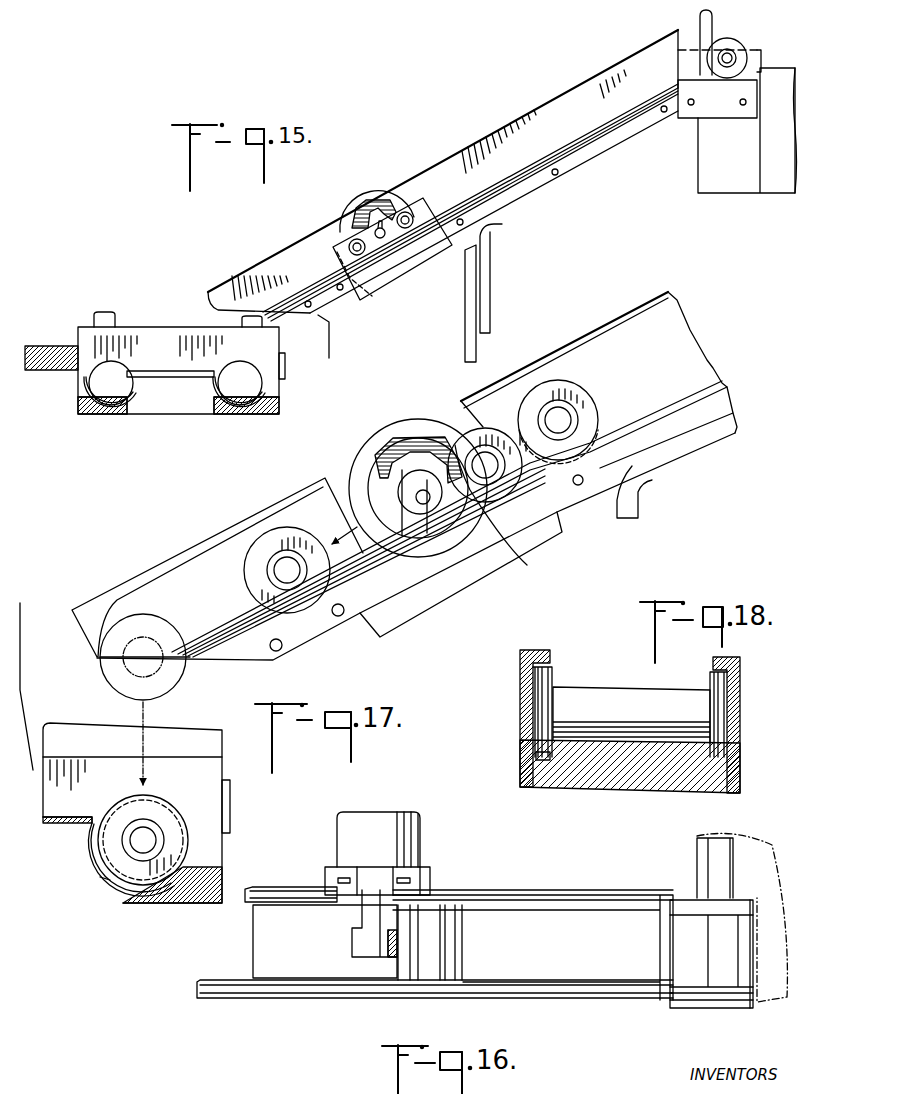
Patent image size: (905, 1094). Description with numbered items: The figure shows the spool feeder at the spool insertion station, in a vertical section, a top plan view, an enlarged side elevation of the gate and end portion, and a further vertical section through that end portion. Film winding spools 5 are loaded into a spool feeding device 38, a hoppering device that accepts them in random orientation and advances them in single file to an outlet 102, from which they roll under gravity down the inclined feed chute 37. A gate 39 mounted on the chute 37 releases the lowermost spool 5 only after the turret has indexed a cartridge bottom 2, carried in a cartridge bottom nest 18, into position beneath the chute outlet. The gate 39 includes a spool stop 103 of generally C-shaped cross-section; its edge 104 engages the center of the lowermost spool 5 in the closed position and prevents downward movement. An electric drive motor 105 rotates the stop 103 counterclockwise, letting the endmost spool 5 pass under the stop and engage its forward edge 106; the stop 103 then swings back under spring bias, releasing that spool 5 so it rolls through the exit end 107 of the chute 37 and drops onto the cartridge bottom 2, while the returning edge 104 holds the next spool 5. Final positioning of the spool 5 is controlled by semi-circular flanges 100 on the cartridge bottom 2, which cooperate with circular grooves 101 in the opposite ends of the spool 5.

In FIG. 15, the cartridge bottom 2 is at (145, 376).
In FIG. 17, the cartridge bottom 2 is at (92, 843).
In FIG. 17, the film winding spool 5 is at (583, 392).
In FIG. 18, the film winding spool 5 is at (612, 700).
In FIG. 16, the film winding spool 5 is at (417, 975).
In FIG. 15, the cartridge bottom nest 18 is at (183, 337).
In FIG. 17, the cartridge bottom nest 18 is at (553, 328).
In FIG. 15, the feed chute 37 is at (556, 114).
In FIG. 17, the feed chute 37 is at (378, 531).
In FIG. 18, the feed chute 37 is at (737, 763).
In FIG. 16, the feed chute 37 is at (558, 997).
In FIG. 16, the spool feeding device 38 is at (758, 872).
In FIG. 15, the gate 39 is at (380, 190).
In FIG. 16, the gate 39 is at (376, 808).
In FIG. 17, the semi-circular flanges 100 is at (100, 877).
In FIG. 18, the circular grooves 101 is at (543, 757).
In FIG. 16, the outlet 102 is at (760, 945).
In FIG. 15, the spool stop 103 is at (357, 215).
In FIG. 16, the spool stop 103 is at (370, 922).
In FIG. 17, the edge of the stop 104 is at (503, 519).
In FIG. 15, the electric drive motor 105 is at (401, 192).
In FIG. 16, the electric drive motor 105 is at (338, 826).
In FIG. 17, the forward edge 106 is at (383, 462).
In FIG. 17, the exit end 107 is at (102, 663).